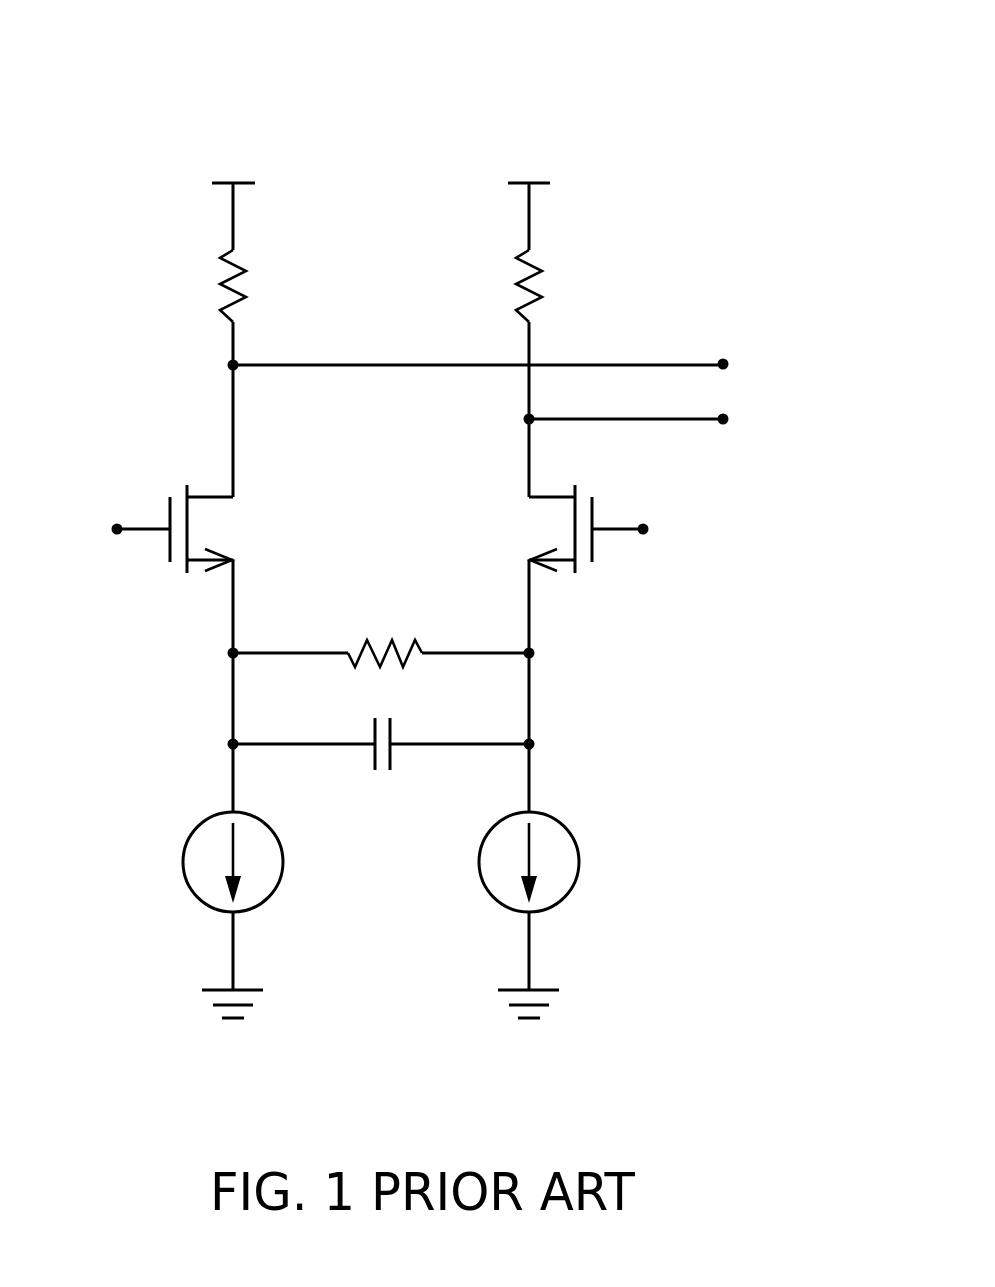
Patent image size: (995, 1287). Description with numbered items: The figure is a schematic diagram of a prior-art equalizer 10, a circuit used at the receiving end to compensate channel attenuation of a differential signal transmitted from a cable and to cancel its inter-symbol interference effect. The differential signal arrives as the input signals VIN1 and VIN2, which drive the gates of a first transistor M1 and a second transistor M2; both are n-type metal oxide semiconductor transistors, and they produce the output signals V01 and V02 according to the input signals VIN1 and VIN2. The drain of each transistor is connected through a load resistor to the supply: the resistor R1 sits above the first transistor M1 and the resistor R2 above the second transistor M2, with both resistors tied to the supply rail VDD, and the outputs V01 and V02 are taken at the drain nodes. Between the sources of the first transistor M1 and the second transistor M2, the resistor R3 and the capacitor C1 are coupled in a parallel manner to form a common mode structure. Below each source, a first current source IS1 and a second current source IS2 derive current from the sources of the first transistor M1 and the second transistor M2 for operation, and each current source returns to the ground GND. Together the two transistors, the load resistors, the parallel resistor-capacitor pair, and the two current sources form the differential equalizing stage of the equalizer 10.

The equalizer 10 is at (658, 105).
The resistor R1 is at (254, 286).
The resistor R2 is at (509, 286).
The resistor R3 is at (385, 635).
The capacitor C1 is at (406, 733).
The first transistor M1 is at (220, 529).
The second transistor M2 is at (540, 529).
The first current source IS1 is at (213, 862).
The second current source IS2 is at (552, 862).
The supply voltage VDD is at (383, 162).
The ground GND is at (381, 1030).
The output signal V01 is at (509, 363).
The output signal V02 is at (657, 418).
The input signal VIN1 is at (650, 526).
The input signal VIN2 is at (110, 526).